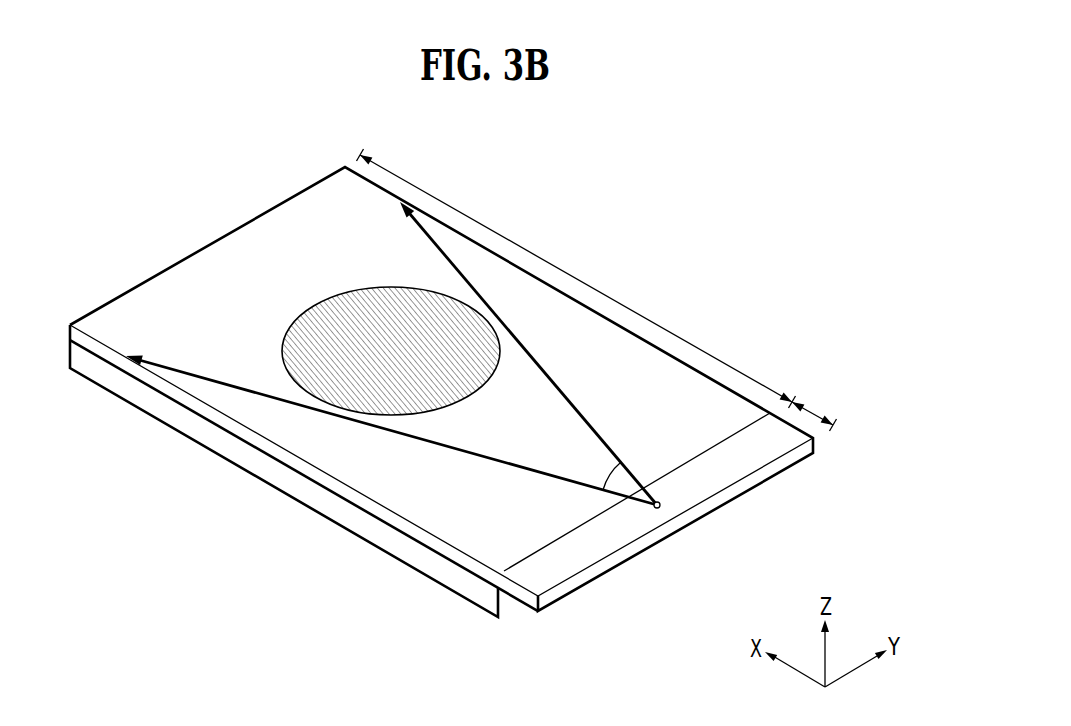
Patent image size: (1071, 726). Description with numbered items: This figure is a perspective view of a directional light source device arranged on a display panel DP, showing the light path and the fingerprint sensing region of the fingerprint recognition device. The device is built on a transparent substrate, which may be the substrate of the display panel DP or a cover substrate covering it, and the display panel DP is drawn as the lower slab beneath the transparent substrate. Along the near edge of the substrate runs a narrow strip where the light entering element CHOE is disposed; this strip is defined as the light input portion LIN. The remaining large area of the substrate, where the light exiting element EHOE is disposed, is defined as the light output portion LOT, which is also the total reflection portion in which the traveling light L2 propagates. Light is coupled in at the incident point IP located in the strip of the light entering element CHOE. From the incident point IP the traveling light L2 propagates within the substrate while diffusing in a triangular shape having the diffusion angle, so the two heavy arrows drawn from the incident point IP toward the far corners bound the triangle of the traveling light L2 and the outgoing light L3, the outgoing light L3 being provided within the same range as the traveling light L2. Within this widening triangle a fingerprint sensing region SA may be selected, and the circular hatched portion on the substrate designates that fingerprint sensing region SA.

The display panel DP is at (181, 422).
The light exiting element EHOE is at (352, 468).
The light entering element CHOE is at (563, 565).
The fingerprint sensing region SA is at (323, 303).
The light output portion LOT is at (575, 275).
The light input portion LIN is at (822, 407).
The traveling light L2 is at (391, 356).
The outgoing light L3 is at (522, 468).
The incident point IP is at (660, 508).